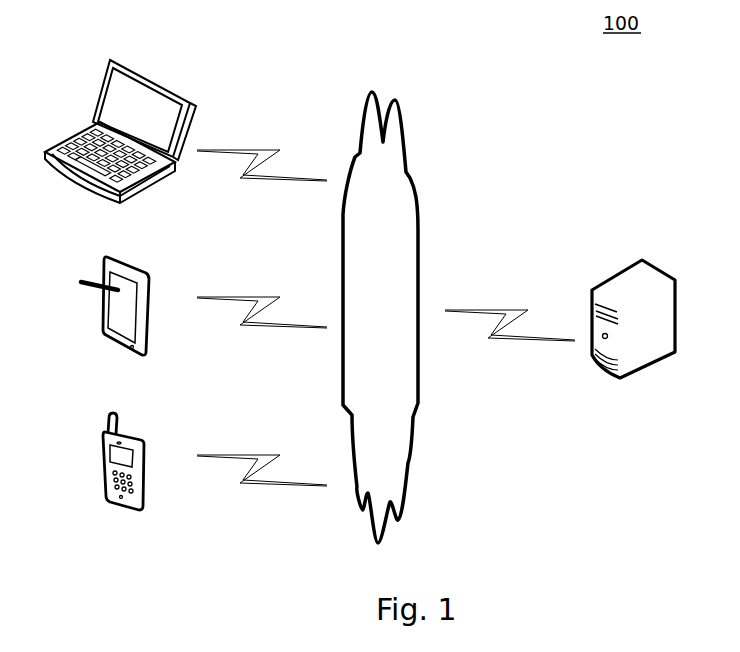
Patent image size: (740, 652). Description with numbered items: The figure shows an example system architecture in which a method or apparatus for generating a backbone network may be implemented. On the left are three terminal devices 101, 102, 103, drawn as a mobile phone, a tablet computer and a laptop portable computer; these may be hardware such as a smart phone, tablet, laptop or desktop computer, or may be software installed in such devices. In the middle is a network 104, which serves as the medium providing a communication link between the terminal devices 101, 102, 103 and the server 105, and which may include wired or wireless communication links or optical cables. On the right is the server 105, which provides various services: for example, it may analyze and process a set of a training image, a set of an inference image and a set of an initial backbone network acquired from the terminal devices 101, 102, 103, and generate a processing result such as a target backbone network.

The terminal device 101 is at (123, 479).
The terminal device 102 is at (115, 322).
The terminal device 103 is at (120, 149).
The network 104 is at (380, 317).
The server 105 is at (633, 336).